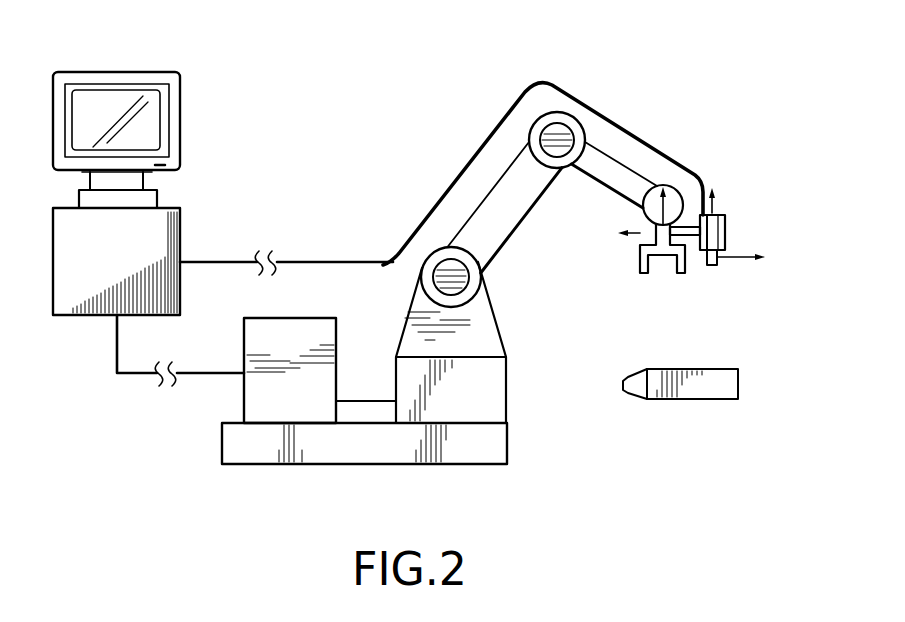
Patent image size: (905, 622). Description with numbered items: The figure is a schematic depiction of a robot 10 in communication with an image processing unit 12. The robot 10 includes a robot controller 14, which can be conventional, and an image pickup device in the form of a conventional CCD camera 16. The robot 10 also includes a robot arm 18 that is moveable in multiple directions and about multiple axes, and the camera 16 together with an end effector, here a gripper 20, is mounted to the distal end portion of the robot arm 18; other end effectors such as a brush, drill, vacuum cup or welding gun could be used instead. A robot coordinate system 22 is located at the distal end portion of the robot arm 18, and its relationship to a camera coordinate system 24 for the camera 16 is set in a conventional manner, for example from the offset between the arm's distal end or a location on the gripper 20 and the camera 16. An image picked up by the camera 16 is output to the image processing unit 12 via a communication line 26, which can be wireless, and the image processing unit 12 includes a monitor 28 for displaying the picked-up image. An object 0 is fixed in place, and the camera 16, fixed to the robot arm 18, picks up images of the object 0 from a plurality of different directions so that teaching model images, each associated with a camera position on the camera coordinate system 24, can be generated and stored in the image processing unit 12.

The robot 10 is at (540, 418).
The image processing unit 12 is at (180, 232).
The robot controller 14 is at (247, 390).
The CCD camera 16 is at (702, 246).
The robot arm 18 is at (485, 242).
The gripper 20 is at (682, 274).
The robot coordinate system 22 is at (640, 235).
The camera coordinate system 24 is at (738, 248).
The communication line 26 is at (562, 88).
The monitor 28 is at (180, 118).
The object 0 is at (752, 344).